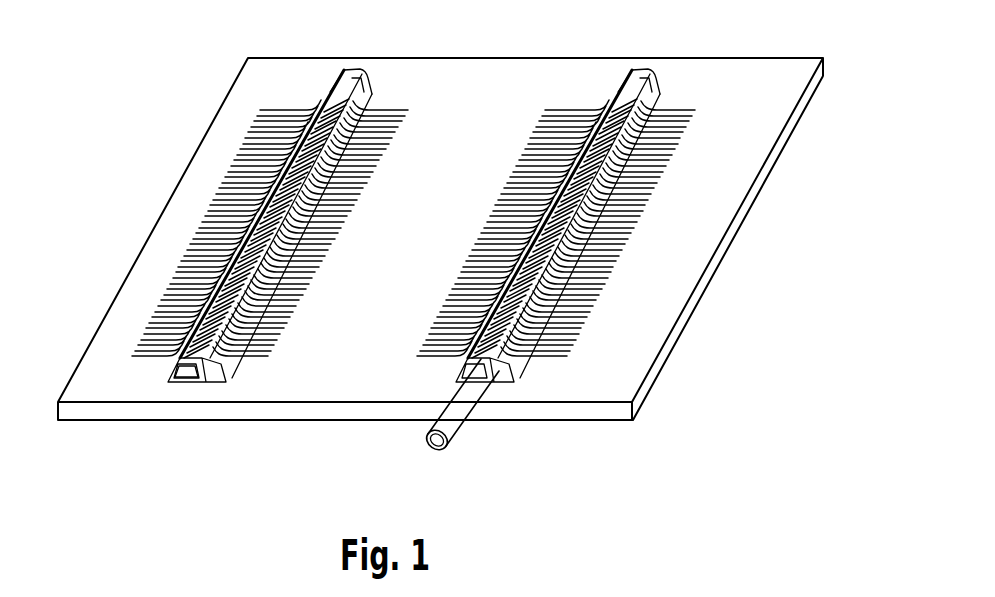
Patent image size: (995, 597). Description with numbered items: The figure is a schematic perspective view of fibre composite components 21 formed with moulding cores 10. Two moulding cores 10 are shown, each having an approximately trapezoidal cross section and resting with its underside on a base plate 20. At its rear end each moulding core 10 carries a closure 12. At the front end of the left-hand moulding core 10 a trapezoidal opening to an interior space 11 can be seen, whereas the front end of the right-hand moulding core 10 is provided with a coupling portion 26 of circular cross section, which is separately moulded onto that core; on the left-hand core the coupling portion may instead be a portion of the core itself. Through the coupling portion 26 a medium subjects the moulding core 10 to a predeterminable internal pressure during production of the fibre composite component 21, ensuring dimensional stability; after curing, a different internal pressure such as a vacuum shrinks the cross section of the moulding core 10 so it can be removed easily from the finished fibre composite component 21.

The moulding core 10 is at (497, 378).
The interior space 11 is at (185, 375).
The closure 12 is at (637, 70).
The base plate 20 is at (632, 333).
The fibre composite component 21 is at (244, 115).
The coupling portion 26 is at (432, 427).